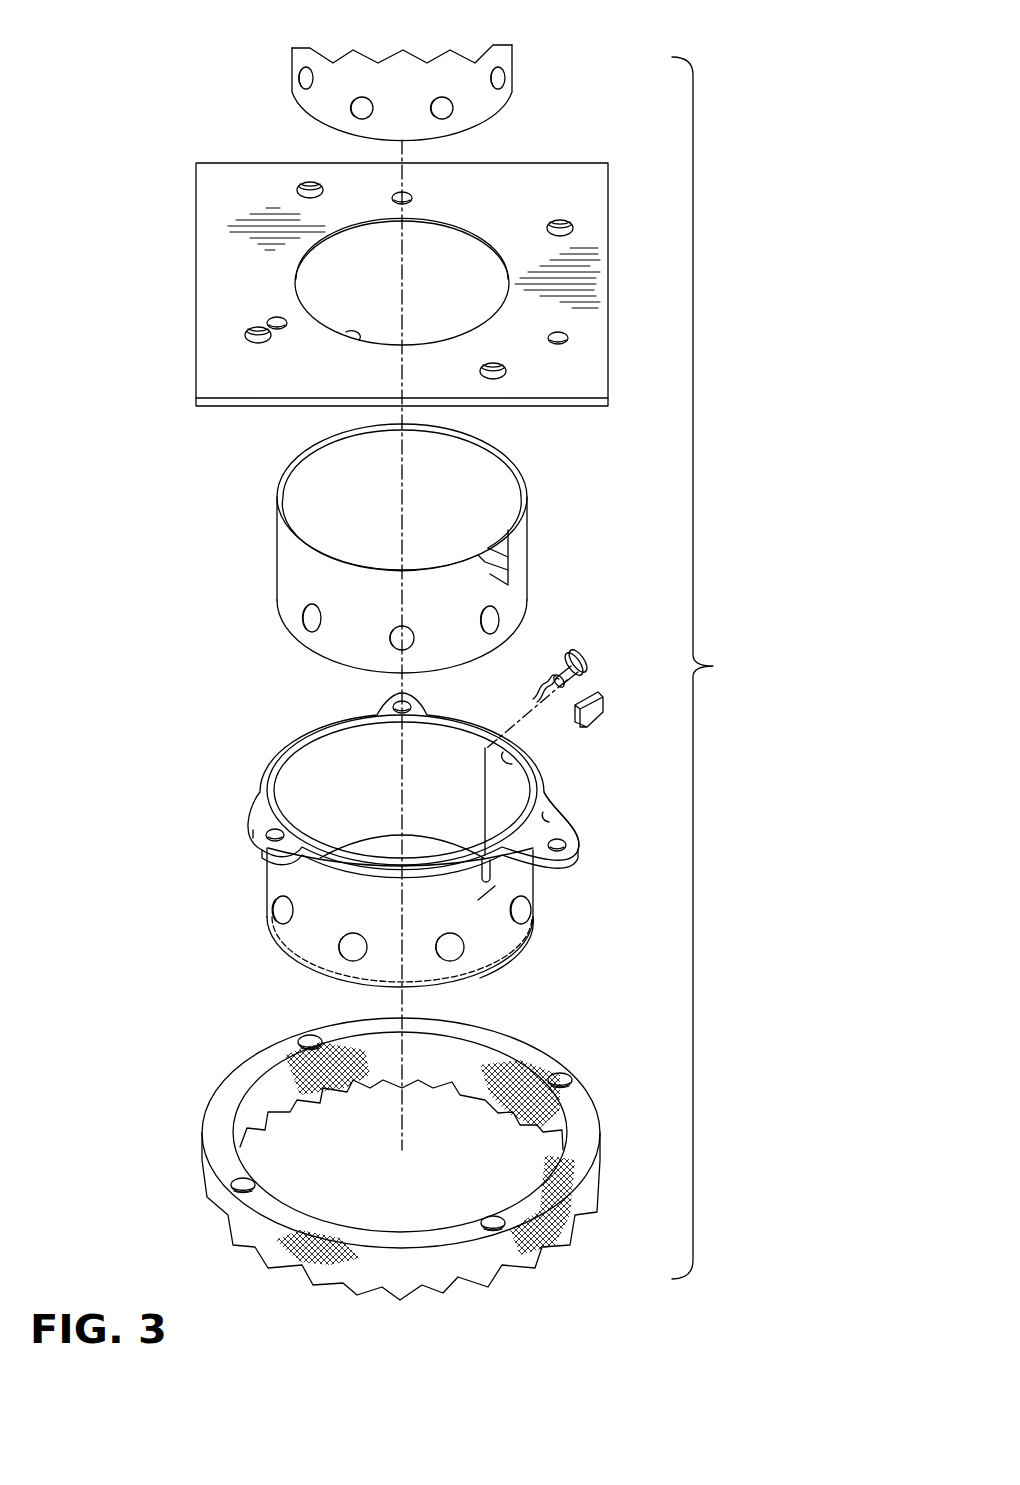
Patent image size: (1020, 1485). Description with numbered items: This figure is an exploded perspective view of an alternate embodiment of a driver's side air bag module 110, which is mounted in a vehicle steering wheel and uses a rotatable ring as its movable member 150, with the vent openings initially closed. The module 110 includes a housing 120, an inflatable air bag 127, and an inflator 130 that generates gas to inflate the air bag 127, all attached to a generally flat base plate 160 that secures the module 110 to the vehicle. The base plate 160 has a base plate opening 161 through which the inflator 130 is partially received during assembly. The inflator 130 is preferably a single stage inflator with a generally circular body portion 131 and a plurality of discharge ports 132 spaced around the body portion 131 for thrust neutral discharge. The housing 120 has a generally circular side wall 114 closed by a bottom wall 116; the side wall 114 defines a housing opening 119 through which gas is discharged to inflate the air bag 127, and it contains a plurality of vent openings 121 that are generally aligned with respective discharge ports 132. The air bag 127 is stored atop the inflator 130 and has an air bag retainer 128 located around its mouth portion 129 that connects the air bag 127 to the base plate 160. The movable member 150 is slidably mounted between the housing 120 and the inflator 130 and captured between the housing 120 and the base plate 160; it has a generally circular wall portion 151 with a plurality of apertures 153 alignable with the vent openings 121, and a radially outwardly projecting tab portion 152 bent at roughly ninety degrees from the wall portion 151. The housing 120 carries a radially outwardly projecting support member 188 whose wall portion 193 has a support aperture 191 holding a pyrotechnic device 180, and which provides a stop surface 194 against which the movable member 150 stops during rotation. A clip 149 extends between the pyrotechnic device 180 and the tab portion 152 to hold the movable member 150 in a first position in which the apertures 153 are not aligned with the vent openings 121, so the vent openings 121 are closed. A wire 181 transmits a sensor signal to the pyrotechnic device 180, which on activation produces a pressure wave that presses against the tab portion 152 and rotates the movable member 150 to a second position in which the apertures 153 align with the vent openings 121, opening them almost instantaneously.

The air bag module 110 is at (722, 663).
The inflator 130 is at (413, 75).
The body portion 131 is at (358, 65).
The discharge ports 132 is at (352, 110).
The base plate 160 is at (363, 305).
The base plate opening 161 is at (355, 337).
The movable member 150 is at (379, 554).
The wall portion 151 is at (518, 566).
The tab portion 152 is at (508, 562).
The apertures 153 is at (497, 613).
The pyrotechnic device 180 is at (583, 651).
The wire 181 is at (535, 697).
The clip 149 is at (593, 705).
The housing 120 is at (418, 785).
The housing opening 119 is at (512, 760).
The support member 188 is at (567, 807).
The stop surface 194 is at (546, 816).
The side wall 114 is at (408, 920).
The support aperture 191 is at (482, 870).
The wall portion 193 is at (490, 893).
The bottom wall 116 is at (527, 938).
The vent openings 121 is at (348, 952).
The air bag 127 is at (342, 1159).
The air bag retainer 128 is at (232, 1090).
The mouth portion 129 is at (452, 1063).